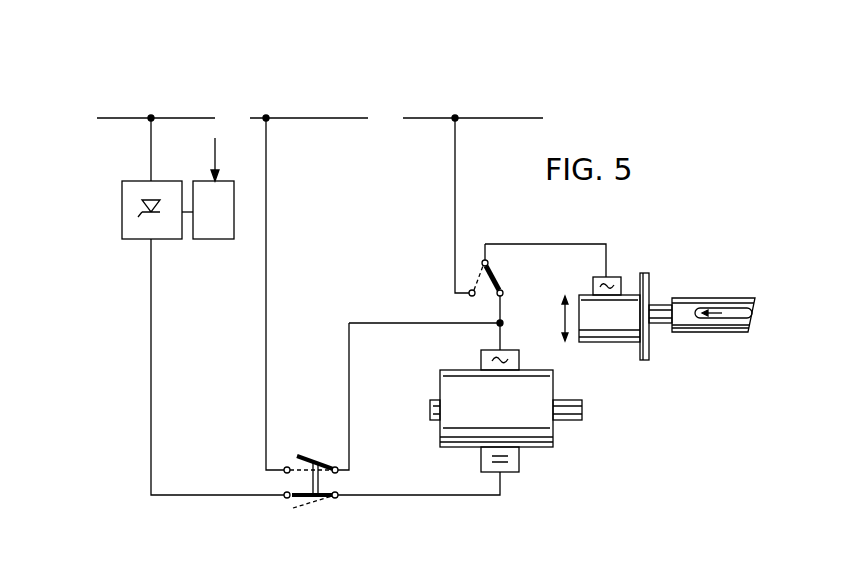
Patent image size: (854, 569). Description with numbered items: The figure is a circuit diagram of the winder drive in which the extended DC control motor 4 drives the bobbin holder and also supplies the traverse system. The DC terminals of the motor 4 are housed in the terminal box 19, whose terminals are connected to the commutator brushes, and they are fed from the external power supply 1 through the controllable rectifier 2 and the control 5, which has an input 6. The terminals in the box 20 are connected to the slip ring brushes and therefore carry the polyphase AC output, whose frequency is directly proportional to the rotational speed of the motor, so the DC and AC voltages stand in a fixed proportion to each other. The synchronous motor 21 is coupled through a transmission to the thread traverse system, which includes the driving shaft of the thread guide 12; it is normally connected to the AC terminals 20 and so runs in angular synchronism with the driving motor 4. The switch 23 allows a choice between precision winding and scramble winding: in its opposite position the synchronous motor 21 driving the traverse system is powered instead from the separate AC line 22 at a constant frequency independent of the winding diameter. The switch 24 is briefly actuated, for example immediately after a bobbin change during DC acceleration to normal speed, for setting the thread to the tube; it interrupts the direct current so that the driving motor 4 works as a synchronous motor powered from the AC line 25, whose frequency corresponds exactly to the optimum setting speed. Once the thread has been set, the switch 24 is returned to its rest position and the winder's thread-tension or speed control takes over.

The external power supply 1 is at (131, 119).
The controllable rectifier 2 is at (122, 211).
The extended DC control motor 4 is at (453, 449).
The control 5 is at (213, 240).
The input 6 is at (205, 159).
The thread guide 12 is at (703, 298).
The terminal box 19 is at (520, 460).
The AC terminals box 20 is at (521, 362).
The synchronous motor 21 is at (608, 345).
The separate AC line 22 is at (494, 119).
The switch 23 is at (504, 291).
The switch 24 is at (316, 462).
The AC line 25 is at (329, 119).